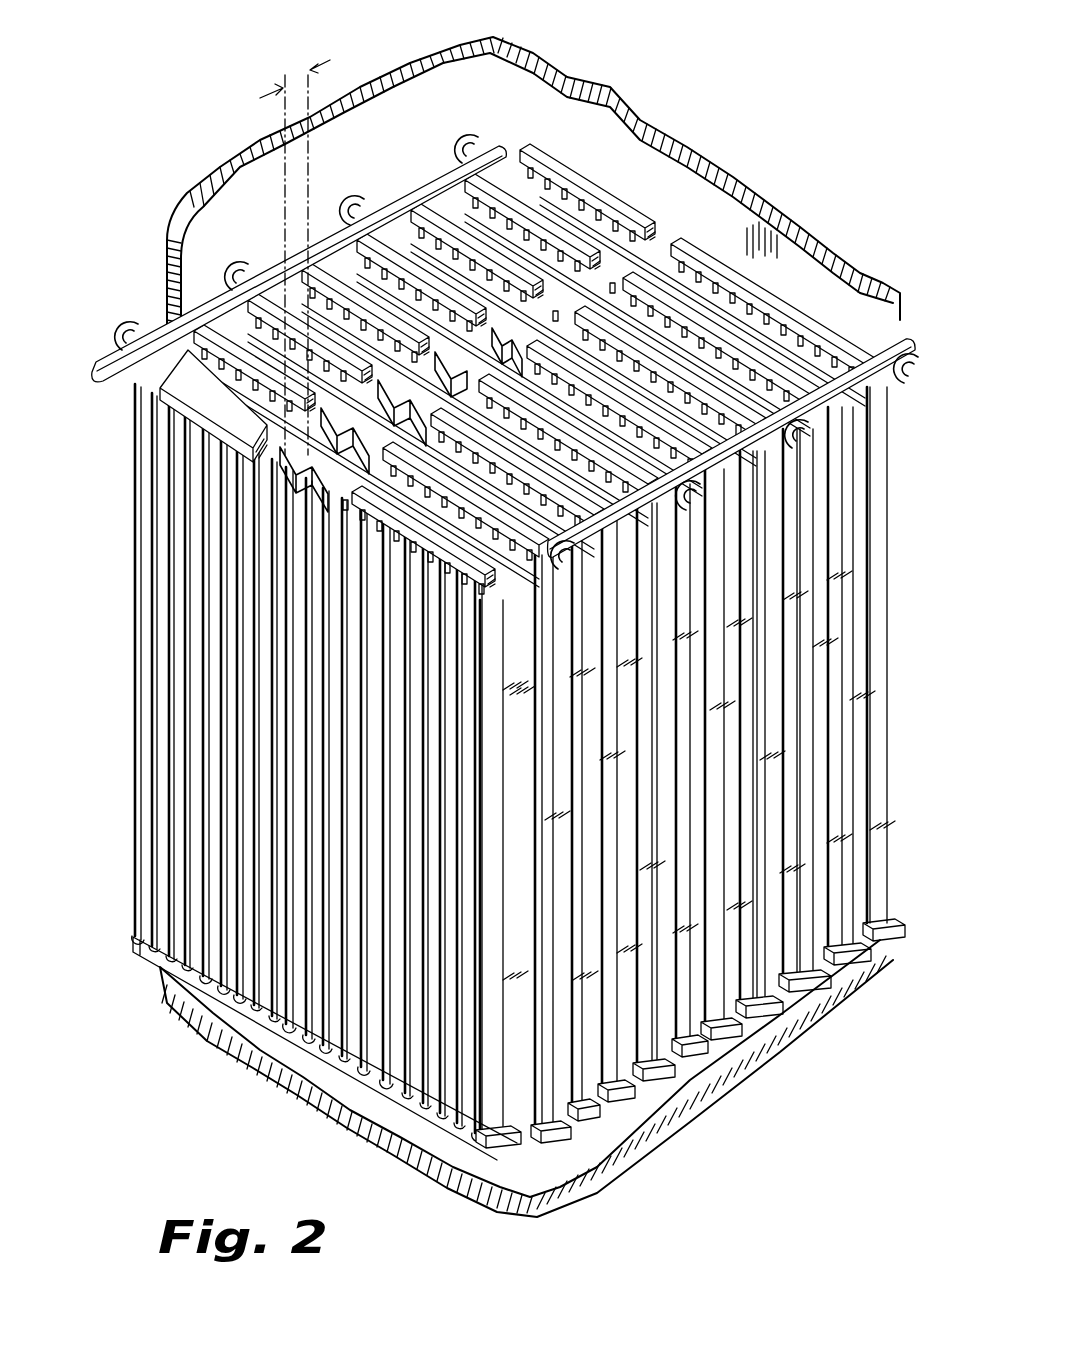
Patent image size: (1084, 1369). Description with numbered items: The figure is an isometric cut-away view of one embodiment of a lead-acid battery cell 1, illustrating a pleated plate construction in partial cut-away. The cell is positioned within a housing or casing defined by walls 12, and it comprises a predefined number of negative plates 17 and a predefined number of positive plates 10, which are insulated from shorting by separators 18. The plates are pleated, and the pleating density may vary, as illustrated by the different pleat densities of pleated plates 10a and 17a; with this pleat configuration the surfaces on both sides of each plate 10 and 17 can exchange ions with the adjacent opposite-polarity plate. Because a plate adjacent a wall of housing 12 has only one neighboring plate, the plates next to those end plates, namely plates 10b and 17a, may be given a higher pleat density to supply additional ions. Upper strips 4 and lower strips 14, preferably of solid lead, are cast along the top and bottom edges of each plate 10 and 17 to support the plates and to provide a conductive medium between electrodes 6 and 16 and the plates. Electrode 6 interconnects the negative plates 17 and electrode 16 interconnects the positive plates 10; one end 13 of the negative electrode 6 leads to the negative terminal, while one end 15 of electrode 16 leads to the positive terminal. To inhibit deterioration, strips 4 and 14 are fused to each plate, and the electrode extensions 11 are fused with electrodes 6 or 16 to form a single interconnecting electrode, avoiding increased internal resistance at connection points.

The lead-acid battery cell 1 is at (499, 628).
The upper strips 4 is at (575, 430).
The electrode 6 is at (267, 313).
The positive plates 10 is at (513, 618).
The pleated plate 10a is at (490, 570).
The plate 10b is at (886, 985).
The electrode extensions 11 is at (362, 196).
The walls 12 is at (168, 272).
The end of the negative electrode 13 is at (108, 367).
The lower strips 14 is at (333, 1067).
The end of electrode 15 is at (630, 470).
The electrode 16 is at (893, 335).
The negative plates 17 is at (534, 304).
The pleated plate 17a is at (228, 333).
The separators 18 is at (527, 1093).